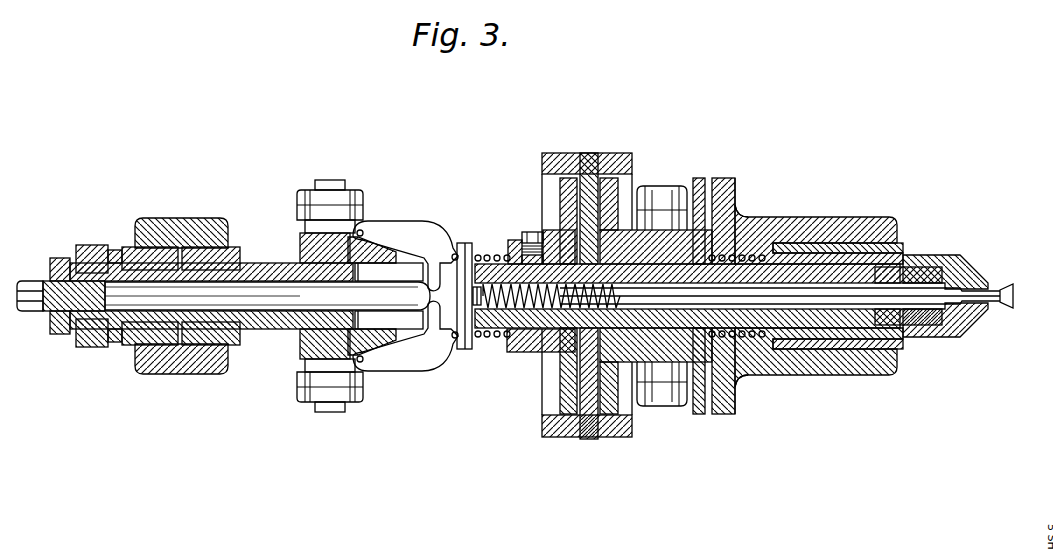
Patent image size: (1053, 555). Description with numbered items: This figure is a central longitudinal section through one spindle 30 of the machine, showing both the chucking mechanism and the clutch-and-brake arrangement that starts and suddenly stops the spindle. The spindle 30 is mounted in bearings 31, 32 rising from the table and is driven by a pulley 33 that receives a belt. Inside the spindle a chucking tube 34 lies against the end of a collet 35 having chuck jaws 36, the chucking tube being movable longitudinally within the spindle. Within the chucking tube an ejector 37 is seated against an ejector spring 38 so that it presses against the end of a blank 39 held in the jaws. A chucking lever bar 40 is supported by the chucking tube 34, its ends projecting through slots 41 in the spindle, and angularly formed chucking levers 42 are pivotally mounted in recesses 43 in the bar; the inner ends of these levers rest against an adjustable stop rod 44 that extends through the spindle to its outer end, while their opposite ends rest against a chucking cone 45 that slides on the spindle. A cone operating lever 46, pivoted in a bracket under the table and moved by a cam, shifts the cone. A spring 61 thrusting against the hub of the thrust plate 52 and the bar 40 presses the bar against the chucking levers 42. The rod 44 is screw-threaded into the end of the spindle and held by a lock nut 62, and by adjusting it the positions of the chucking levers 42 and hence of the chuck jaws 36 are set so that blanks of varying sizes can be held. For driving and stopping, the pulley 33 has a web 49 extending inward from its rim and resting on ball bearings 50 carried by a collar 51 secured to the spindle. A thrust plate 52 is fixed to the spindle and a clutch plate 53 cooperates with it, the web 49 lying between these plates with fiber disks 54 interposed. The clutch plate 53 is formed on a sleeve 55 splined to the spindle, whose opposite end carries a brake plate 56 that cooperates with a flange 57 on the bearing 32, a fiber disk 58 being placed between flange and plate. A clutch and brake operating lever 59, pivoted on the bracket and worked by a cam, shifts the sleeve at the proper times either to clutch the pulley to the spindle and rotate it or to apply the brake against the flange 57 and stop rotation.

The spindle 30 is at (279, 262).
The bearing 31 is at (160, 217).
The bearing 32 is at (835, 232).
The pulley 33 is at (555, 153).
The chucking tube 34 is at (518, 332).
The collet 35 is at (915, 307).
The chuck jaws 36 is at (990, 283).
The ejector 37 is at (748, 302).
The ejector spring 38 is at (490, 330).
The blank 39 is at (1013, 296).
The chucking lever bar 40 is at (466, 243).
The slots 41 is at (403, 270).
The chucking levers 42 is at (418, 232).
The recesses 43 is at (456, 253).
The adjustable stop rod 44 is at (292, 322).
The chucking cone 45 is at (303, 233).
The cone operating lever 46 is at (307, 403).
The web 49 is at (588, 200).
The ball bearings 50 is at (574, 243).
The collar 51 is at (578, 238).
The thrust plate 52 is at (560, 200).
The clutch plate 53 is at (615, 196).
The disks 54 is at (600, 438).
The sleeve 55 is at (655, 247).
The brake plate 56 is at (700, 180).
The flange 57 is at (740, 190).
The disk 58 is at (709, 182).
The clutch and brake operating lever 59 is at (676, 408).
The spring 61 is at (476, 348).
The lock nut 62 is at (60, 257).